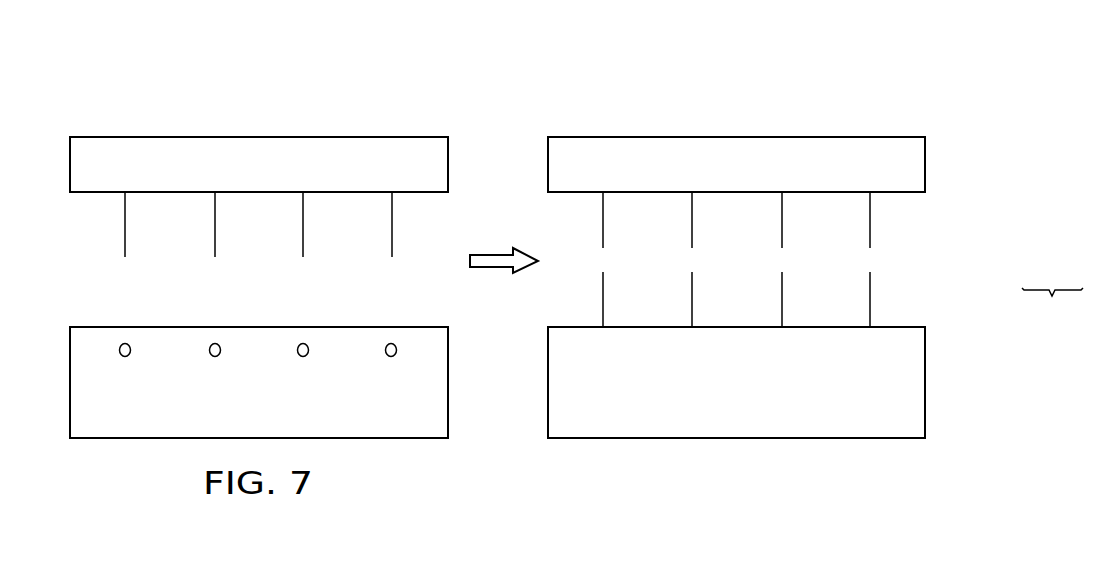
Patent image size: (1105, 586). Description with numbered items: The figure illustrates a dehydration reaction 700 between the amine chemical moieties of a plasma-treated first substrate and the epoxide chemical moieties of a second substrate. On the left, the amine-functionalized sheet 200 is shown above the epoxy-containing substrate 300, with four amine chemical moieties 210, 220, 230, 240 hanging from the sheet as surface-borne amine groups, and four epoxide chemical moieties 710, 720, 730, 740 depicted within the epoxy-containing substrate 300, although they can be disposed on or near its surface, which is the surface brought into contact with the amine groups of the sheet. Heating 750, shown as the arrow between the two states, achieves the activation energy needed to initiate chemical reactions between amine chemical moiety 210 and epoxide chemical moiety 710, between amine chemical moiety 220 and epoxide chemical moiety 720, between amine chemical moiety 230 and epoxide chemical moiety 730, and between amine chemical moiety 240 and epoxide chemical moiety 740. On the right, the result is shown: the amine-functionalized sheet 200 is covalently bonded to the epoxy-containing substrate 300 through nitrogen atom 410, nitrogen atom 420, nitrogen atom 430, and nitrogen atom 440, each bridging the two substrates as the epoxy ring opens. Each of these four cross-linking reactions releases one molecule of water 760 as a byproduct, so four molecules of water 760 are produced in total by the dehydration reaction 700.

The dehydration reaction 700 is at (436, 91).
The amine-functionalized sheet 200 is at (278, 181).
The epoxy-containing substrate 300 is at (448, 370).
The amine chemical moiety 210 is at (392, 238).
The amine chemical moiety 220 is at (303, 238).
The amine chemical moiety 230 is at (215, 238).
The amine chemical moiety 240 is at (125, 238).
The nitrogen atom 410 is at (870, 227).
The nitrogen atom 420 is at (782, 227).
The nitrogen atom 430 is at (692, 227).
The nitrogen atom 440 is at (603, 227).
The epoxide chemical moiety 710 is at (392, 362).
The epoxide chemical moiety 720 is at (303, 362).
The epoxide chemical moiety 730 is at (213, 362).
The epoxide chemical moiety 740 is at (122, 362).
The heating 750 is at (492, 254).
The molecule of water 760 is at (1055, 291).